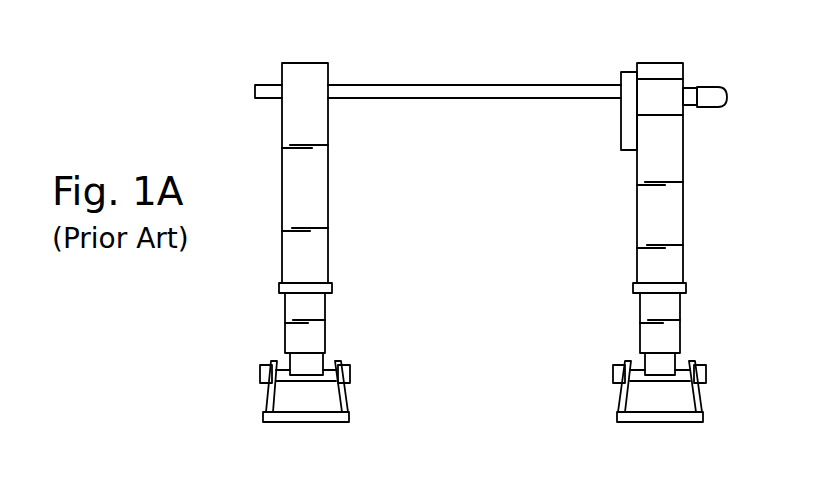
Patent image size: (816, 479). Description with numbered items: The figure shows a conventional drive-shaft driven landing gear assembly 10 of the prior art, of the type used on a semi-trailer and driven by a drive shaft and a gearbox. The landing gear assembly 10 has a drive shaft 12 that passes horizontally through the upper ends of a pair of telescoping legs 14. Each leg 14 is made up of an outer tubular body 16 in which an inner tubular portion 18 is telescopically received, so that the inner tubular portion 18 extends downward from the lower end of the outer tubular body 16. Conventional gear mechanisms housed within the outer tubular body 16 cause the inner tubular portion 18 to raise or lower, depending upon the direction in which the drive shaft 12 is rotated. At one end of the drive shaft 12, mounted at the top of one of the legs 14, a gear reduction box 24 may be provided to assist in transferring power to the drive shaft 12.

The landing gear assembly 10 is at (203, 86).
The drive shaft 12 is at (438, 85).
The telescoping legs 14 is at (348, 185).
The outer tubular body 16 is at (295, 195).
The inner tubular portion 18 is at (316, 338).
The gear reduction box 24 is at (662, 93).